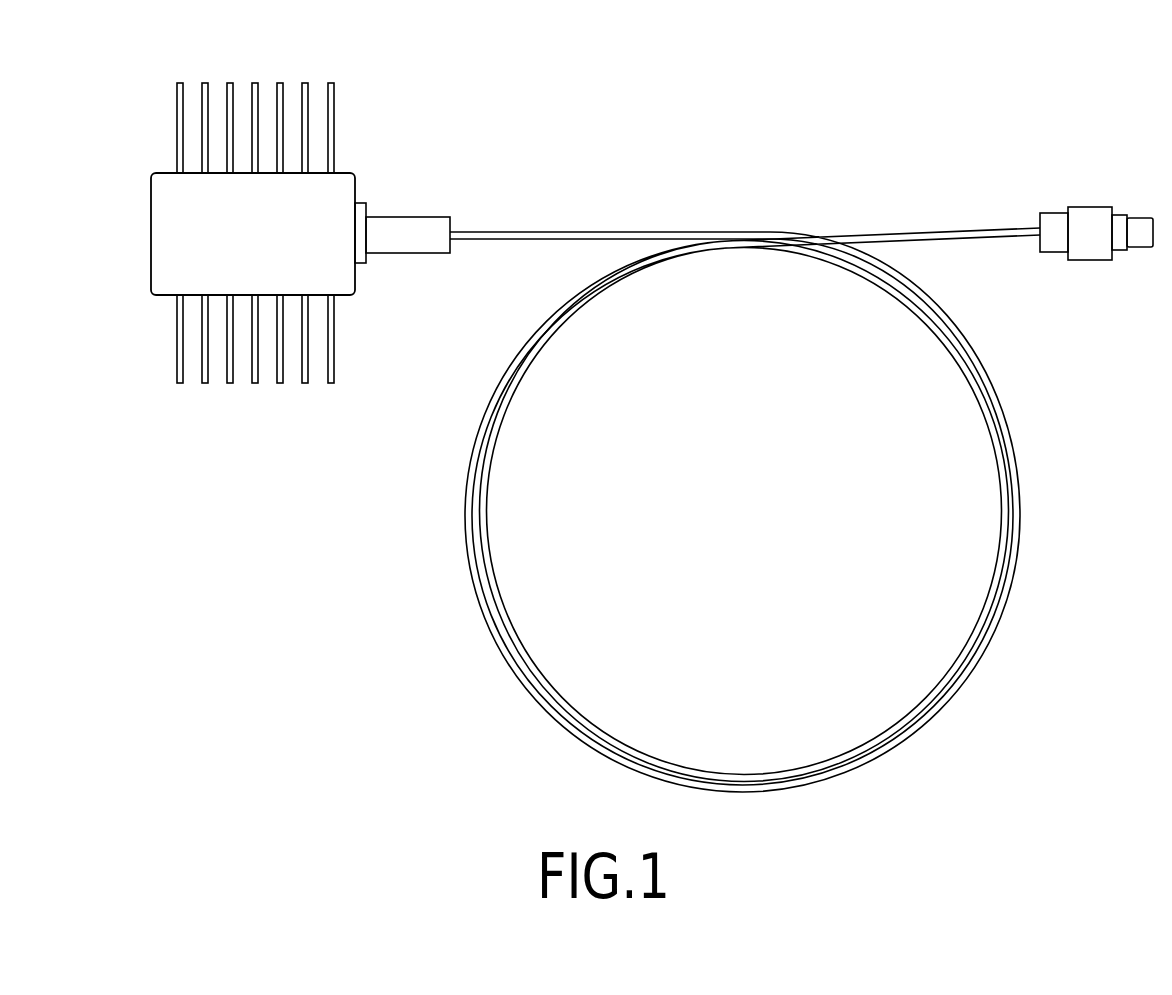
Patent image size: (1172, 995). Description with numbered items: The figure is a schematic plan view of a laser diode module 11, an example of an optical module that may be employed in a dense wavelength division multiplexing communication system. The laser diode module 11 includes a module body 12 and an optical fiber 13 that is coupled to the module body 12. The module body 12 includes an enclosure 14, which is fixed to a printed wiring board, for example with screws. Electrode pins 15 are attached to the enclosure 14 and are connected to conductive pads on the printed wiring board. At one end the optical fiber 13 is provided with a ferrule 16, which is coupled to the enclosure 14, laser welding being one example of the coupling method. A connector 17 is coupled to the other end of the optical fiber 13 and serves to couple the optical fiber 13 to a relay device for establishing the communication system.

The laser diode module 11 is at (913, 110).
The module body 12 is at (152, 172).
The optical fiber 13 is at (657, 232).
The enclosure 14 is at (152, 250).
The electrode pins 15 is at (227, 380).
The ferrule 16 is at (428, 217).
The connector 17 is at (1090, 207).